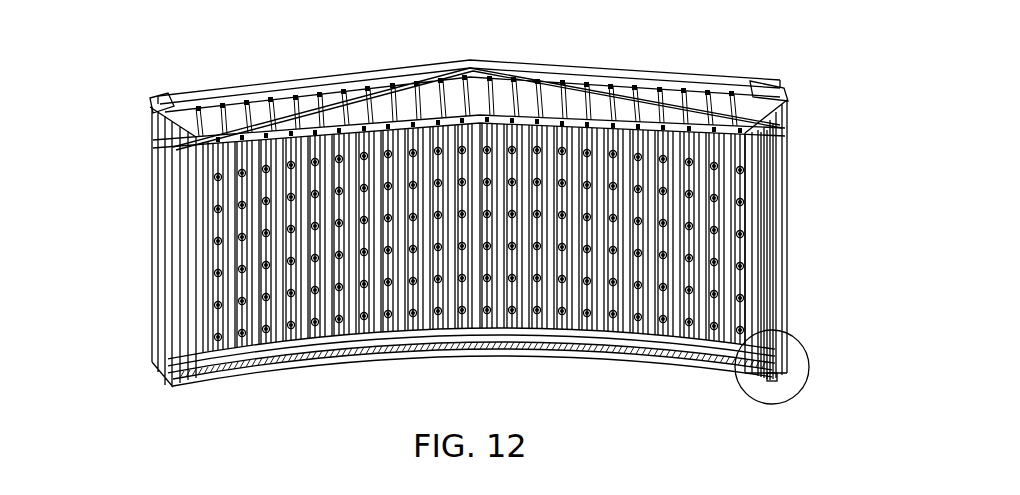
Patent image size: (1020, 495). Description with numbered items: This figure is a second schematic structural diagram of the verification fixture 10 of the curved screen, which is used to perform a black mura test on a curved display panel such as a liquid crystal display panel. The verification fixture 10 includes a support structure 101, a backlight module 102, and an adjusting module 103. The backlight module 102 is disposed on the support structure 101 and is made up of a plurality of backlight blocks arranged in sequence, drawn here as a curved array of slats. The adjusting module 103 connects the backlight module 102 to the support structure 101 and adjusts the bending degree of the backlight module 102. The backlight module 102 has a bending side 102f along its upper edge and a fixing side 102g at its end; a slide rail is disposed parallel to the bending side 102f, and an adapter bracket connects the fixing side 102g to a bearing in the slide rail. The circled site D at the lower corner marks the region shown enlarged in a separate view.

The verification fixture of the curved screen 10 is at (117, 57).
The support structure 101 is at (783, 147).
The backlight module 102 is at (740, 207).
The bending side 102f is at (540, 92).
The fixing side 102g is at (770, 247).
The adjusting module 103 is at (773, 87).
The site D is at (782, 373).